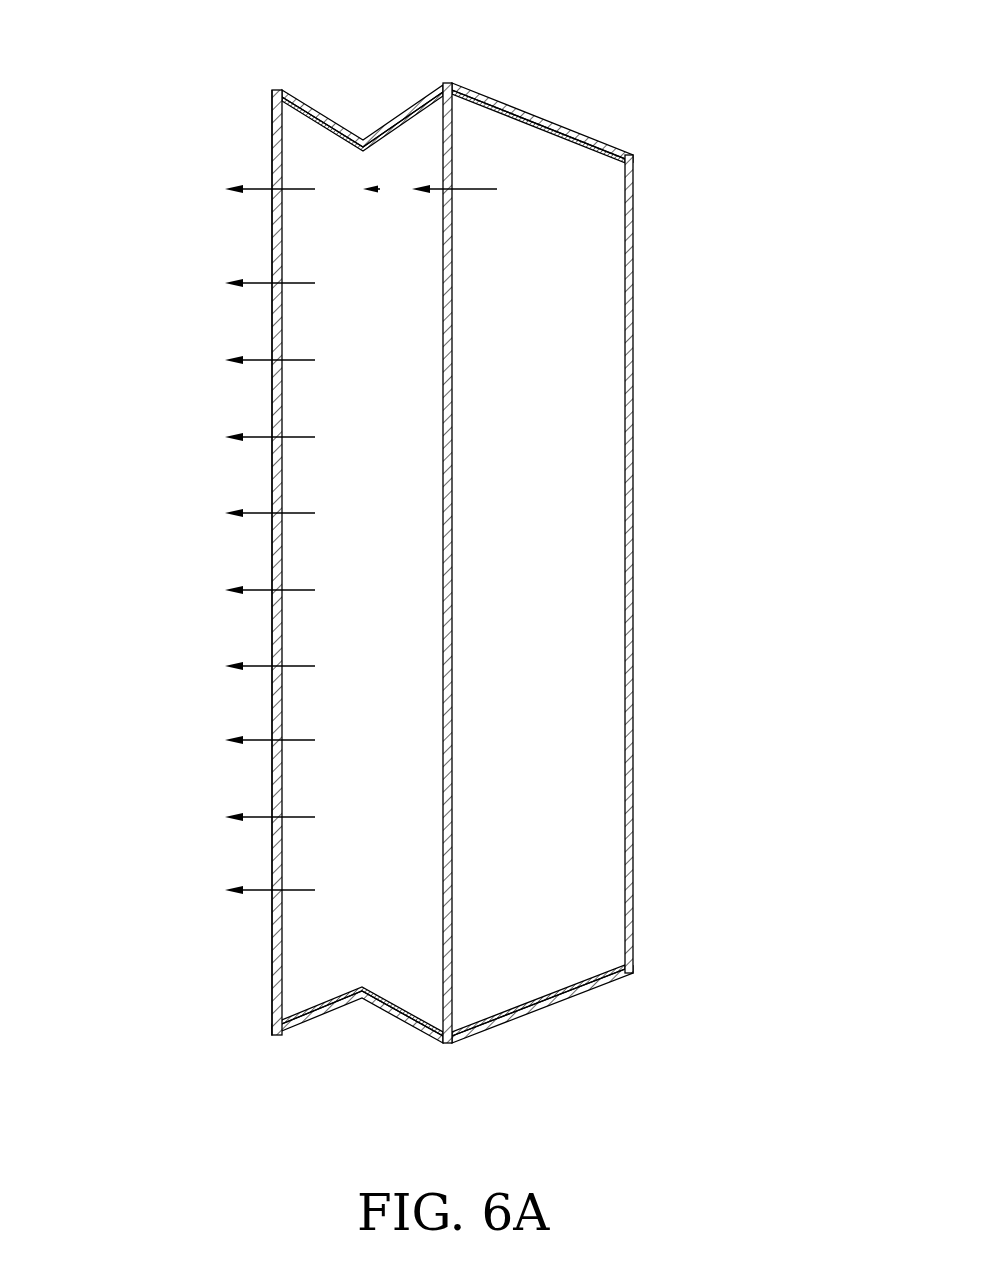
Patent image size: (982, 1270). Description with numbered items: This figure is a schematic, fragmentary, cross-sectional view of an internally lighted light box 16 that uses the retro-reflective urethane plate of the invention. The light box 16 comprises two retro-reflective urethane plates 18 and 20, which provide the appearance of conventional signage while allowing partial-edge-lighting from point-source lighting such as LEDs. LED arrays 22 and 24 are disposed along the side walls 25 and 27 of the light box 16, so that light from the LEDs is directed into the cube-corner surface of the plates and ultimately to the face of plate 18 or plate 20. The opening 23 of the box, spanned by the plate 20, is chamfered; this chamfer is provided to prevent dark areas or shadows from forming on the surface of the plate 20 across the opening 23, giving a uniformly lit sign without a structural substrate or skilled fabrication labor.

The light box 16 is at (700, 564).
The retro-reflective urethane plate 18 is at (452, 508).
The retro-reflective urethane plate 20 is at (282, 628).
The LED array 22 is at (605, 163).
The opening 23 is at (292, 143).
The LED array 24 is at (358, 150).
The side wall 25 is at (558, 126).
The side wall 27 is at (319, 108).